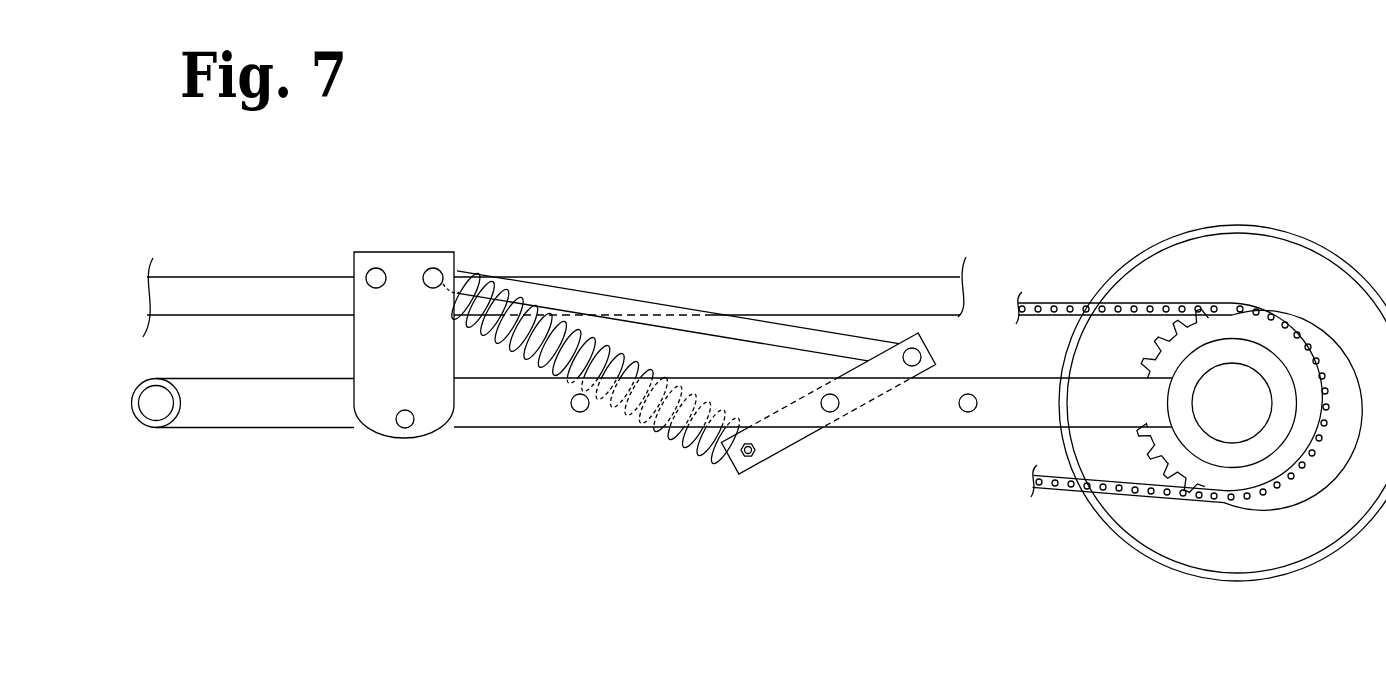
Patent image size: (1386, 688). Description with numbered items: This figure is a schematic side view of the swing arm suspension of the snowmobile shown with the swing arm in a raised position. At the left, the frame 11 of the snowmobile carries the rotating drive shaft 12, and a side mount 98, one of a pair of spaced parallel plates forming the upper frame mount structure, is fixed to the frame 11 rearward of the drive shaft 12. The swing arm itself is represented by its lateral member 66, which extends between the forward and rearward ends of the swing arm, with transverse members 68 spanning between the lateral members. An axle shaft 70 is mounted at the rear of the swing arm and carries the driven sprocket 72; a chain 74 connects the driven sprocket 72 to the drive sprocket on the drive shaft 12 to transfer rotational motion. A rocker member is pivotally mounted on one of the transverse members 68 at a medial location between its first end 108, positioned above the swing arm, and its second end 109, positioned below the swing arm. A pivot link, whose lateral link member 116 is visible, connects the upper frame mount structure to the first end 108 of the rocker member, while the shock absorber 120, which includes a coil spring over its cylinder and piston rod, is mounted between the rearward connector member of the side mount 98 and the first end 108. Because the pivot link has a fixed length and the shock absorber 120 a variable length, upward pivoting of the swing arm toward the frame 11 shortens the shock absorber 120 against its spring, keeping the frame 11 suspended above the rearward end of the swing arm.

The frame 11 is at (722, 292).
The rotating drive shaft 12 is at (197, 459).
The lateral member 66 is at (508, 410).
The transverse member 68 is at (840, 415).
The axle shaft 70 is at (1225, 423).
The driven sprocket 72 is at (1177, 348).
The chain 74 is at (1060, 307).
The side mount 98 is at (400, 268).
The first end of rocker member 108 is at (925, 330).
The second end of rocker member 109 is at (735, 467).
The lateral link member 116 is at (585, 300).
The shock absorber 120 is at (597, 398).